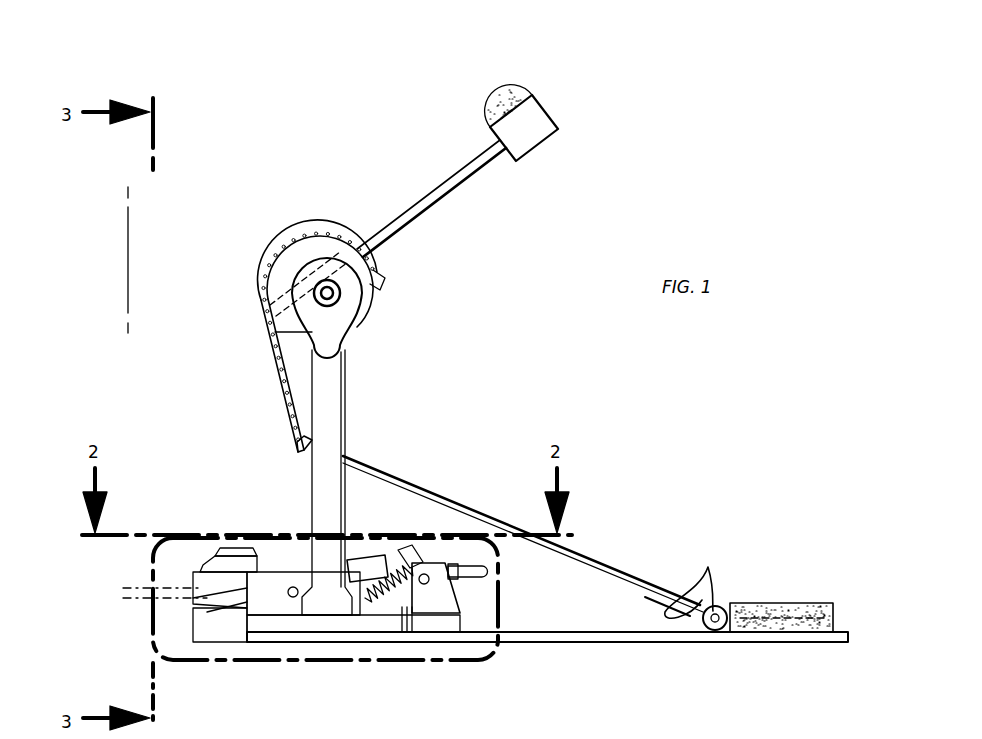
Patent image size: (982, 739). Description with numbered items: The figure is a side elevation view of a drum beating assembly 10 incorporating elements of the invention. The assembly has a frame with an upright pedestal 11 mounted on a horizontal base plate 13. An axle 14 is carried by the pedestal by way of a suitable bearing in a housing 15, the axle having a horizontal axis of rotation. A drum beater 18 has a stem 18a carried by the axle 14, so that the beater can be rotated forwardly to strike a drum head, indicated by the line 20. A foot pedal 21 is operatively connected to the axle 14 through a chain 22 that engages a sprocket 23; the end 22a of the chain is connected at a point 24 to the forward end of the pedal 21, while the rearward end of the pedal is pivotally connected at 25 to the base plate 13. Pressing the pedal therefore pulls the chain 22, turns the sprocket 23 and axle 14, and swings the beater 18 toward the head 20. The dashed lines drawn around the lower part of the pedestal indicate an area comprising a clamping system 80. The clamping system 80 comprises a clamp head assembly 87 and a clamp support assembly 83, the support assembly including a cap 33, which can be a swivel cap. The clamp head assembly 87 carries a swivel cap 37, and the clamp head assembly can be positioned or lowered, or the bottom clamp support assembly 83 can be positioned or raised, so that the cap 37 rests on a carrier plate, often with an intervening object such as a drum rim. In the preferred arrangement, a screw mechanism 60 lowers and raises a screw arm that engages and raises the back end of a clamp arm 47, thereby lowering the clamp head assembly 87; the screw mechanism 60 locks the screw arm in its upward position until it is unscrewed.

The drum beating assembly 10 is at (303, 508).
The upright pedestal 11 is at (343, 413).
The horizontal base plate 13 is at (558, 643).
The axle 14 is at (336, 294).
The housing 15 is at (336, 333).
The drum beater 18 is at (493, 110).
The stem 18a is at (455, 185).
The head 20 is at (128, 272).
The foot pedal 21 is at (600, 557).
The chain 22 is at (295, 353).
The end of the chain 22a is at (295, 443).
The sprocket 23 is at (292, 262).
The chain connection 24 is at (302, 455).
The pivotal connection 25 is at (749, 588).
The cap 33 is at (232, 610).
The swivel cap 37 is at (217, 598).
The clamp arm 47 is at (364, 560).
The screw mechanism 60 is at (428, 556).
The clamping system 80 is at (150, 640).
The clamp support assembly 83 is at (210, 620).
The clamp head assembly 87 is at (223, 572).